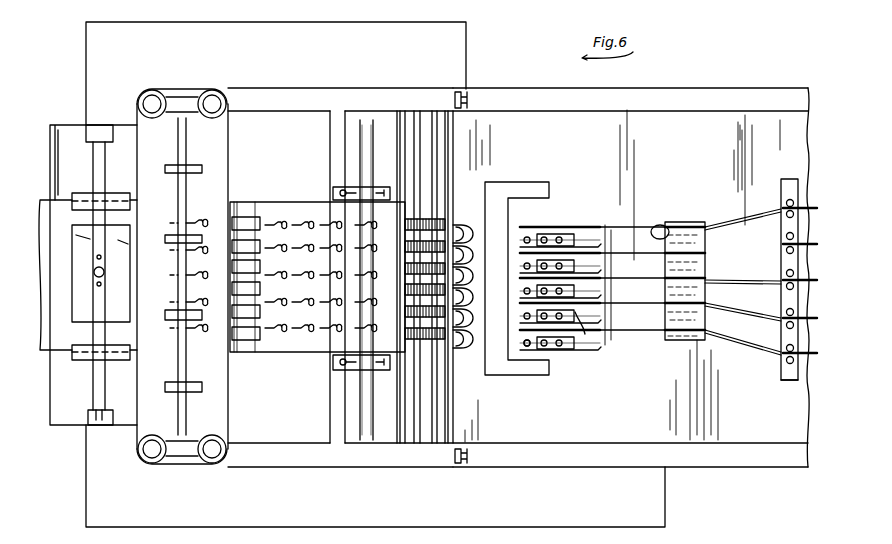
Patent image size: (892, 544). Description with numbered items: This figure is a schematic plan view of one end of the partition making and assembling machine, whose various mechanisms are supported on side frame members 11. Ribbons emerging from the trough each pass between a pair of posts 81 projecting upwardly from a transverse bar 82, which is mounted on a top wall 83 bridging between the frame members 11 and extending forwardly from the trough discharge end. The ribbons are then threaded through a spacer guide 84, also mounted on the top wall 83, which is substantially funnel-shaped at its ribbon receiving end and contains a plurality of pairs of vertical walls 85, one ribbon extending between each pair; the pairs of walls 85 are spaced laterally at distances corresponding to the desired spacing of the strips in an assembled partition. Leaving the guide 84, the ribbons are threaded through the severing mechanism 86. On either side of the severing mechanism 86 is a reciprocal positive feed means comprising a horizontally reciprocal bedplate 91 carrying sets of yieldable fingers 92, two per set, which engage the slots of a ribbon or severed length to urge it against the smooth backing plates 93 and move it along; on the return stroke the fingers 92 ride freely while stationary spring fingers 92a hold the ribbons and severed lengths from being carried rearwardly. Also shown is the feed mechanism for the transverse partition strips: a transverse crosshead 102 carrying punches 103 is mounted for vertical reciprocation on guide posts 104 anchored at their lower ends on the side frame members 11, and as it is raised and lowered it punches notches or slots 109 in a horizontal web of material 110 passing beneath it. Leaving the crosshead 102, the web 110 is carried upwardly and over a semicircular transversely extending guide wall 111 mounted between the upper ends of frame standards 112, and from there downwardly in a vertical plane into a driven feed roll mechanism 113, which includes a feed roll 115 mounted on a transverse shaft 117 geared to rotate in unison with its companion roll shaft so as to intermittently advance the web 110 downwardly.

The side frame members 11 is at (519, 96).
The posts 81 is at (786, 206).
The transverse bar 82 is at (787, 380).
The top wall 83 is at (738, 122).
The spacer guide 84 is at (694, 215).
The vertical walls 85 is at (662, 224).
The severing mechanism 86 is at (504, 188).
The bedplate 91 is at (578, 334).
The yieldable fingers 92 is at (560, 210).
The stationary spring fingers 92a is at (529, 344).
The smooth backing plates 93 is at (582, 245).
The transverse crosshead 102 is at (218, 156).
The punches 103 is at (207, 323).
The guide posts 104 is at (212, 100).
The notches or slots 109 is at (327, 328).
The web of material 110 is at (64, 348).
The guide wall 111 is at (357, 183).
The frame standards 112 is at (273, 100).
The feed roll mechanism 113 is at (413, 102).
The feed roll 115 is at (442, 239).
The transverse shaft 117 is at (440, 137).